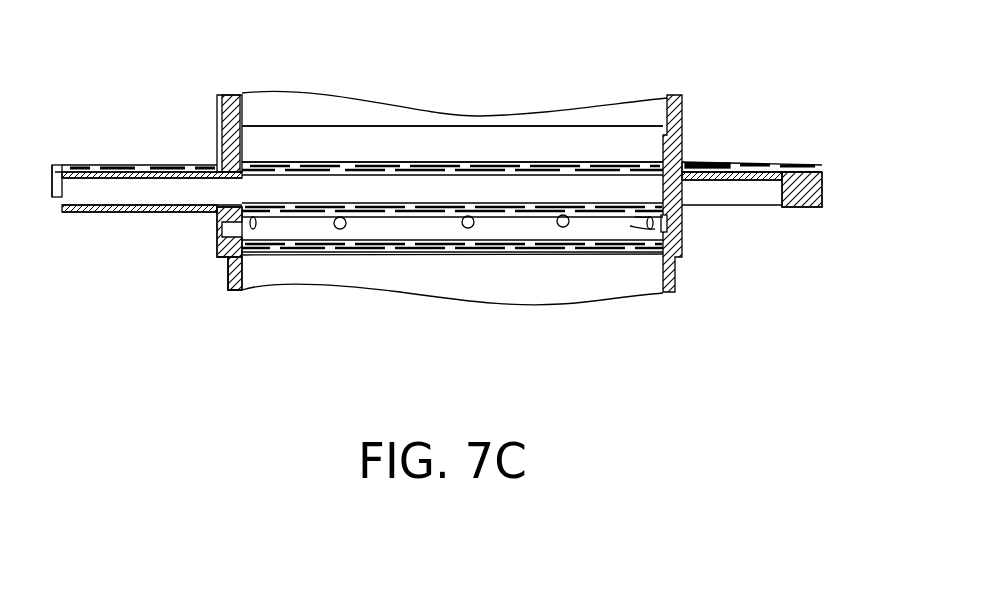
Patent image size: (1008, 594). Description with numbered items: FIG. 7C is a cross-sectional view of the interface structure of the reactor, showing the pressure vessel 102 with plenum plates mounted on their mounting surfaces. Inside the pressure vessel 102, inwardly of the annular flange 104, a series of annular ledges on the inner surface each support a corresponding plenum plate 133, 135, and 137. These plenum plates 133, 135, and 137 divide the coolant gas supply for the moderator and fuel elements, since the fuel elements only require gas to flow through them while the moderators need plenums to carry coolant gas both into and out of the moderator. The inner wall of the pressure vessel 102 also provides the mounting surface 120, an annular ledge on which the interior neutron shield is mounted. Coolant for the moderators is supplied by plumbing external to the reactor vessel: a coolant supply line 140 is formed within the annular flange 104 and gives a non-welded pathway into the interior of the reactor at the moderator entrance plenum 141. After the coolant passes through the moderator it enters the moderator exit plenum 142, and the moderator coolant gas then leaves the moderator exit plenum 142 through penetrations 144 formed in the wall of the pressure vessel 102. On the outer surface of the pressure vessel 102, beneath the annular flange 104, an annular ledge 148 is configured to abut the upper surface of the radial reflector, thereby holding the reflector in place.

The pressure vessel 102 is at (695, 276).
The annular flange 104 is at (822, 195).
The mounting surface 120 is at (437, 126).
The plenum plate 133 is at (533, 162).
The plenum plate 135 is at (660, 232).
The plenum plate 137 is at (488, 253).
The coolant supply line 140 is at (143, 180).
The moderator entrance plenum 141 is at (622, 170).
The moderator exit plenum 142 is at (541, 246).
The penetrations 144 is at (463, 227).
The annular ledge 148 is at (206, 282).